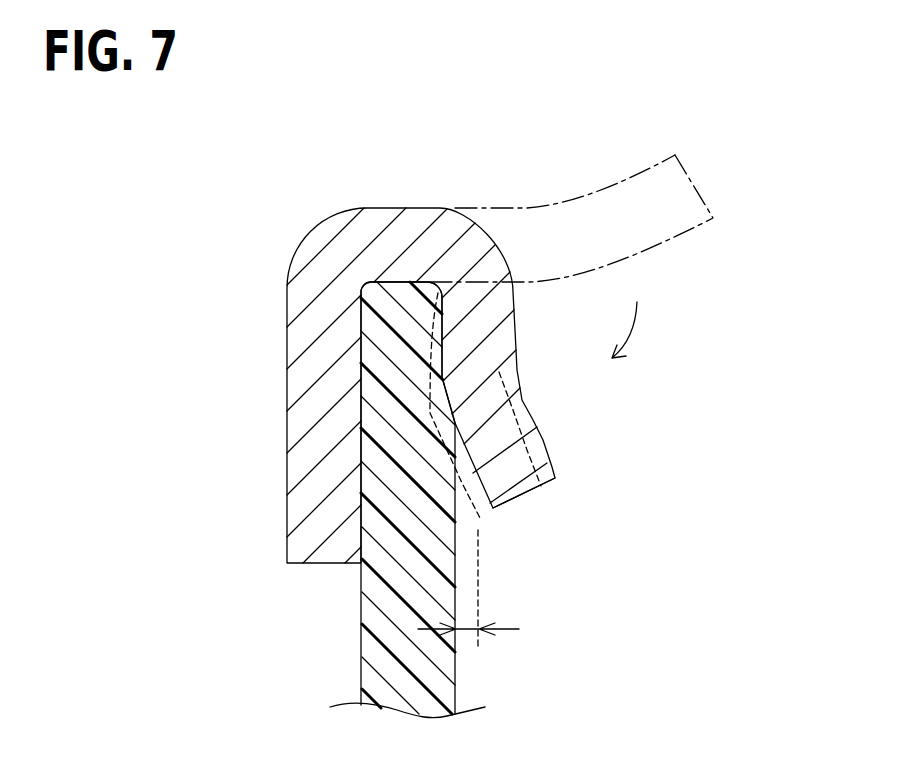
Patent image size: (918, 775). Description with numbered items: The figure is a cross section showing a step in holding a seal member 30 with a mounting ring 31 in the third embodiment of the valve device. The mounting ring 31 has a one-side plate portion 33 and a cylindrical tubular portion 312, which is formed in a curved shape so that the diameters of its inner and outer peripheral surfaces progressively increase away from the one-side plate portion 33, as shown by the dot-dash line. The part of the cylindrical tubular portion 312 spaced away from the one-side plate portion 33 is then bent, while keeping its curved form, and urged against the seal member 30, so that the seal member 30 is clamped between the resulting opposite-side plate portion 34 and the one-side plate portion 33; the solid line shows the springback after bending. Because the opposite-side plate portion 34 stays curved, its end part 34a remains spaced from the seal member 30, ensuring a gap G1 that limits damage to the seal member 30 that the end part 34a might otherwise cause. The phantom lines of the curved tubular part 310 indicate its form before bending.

The seal member 30 is at (362, 676).
The mounting ring 31 is at (293, 235).
The one-side plate portion 33 is at (297, 426).
The opposite-side plate portion 34 is at (538, 430).
The end part 34a is at (492, 508).
The mating member (phantom) 310 is at (691, 146).
The cylindrical tubular portion 312 is at (600, 192).
The gap G1 is at (467, 629).